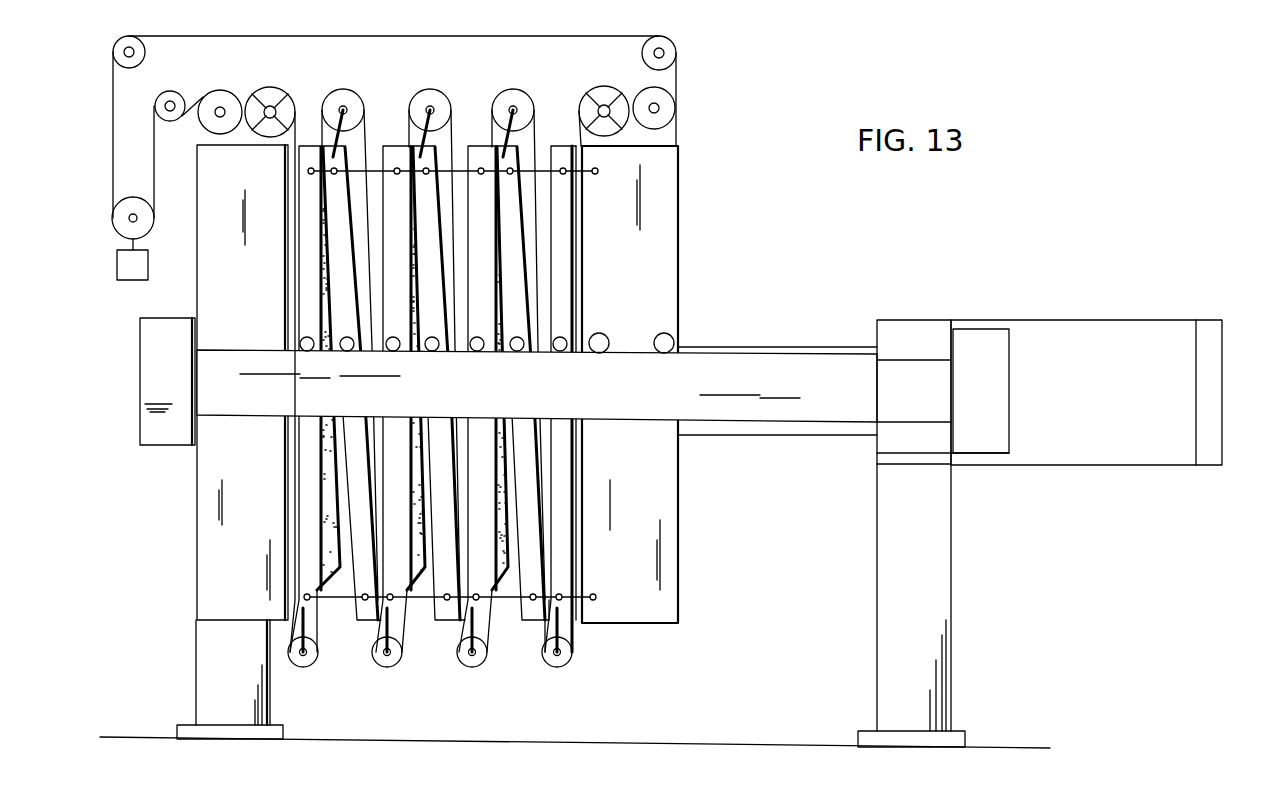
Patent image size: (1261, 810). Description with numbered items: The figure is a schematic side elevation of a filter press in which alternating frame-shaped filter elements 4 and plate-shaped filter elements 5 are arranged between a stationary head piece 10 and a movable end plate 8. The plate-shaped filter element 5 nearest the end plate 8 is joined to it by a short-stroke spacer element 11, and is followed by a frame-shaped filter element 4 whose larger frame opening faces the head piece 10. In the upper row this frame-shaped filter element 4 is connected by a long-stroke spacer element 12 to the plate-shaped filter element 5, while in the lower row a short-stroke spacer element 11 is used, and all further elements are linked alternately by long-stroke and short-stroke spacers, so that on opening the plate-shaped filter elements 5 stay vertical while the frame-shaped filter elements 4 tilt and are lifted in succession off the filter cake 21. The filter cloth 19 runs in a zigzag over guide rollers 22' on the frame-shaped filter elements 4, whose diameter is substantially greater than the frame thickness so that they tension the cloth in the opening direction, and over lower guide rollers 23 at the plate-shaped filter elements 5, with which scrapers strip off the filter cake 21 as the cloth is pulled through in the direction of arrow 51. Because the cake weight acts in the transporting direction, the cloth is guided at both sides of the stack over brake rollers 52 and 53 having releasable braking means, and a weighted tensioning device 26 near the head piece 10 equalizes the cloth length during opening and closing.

The frame-shaped filter element 4 is at (525, 497).
The plate-shaped filter element 5 is at (565, 250).
The end plate 8 is at (667, 207).
The head piece 10 is at (228, 553).
The short-stroke spacer element 11 is at (539, 592).
The long-stroke spacer element 12 is at (505, 590).
The filter cloth 19 is at (536, 128).
The filter cake 21 is at (410, 590).
The guide roller 22' is at (526, 100).
The lower guide roller 23 is at (565, 660).
The tensioning device 26 is at (110, 238).
The arrow 51 is at (481, 130).
The brake roller 52 is at (600, 90).
The brake roller 53 is at (272, 96).